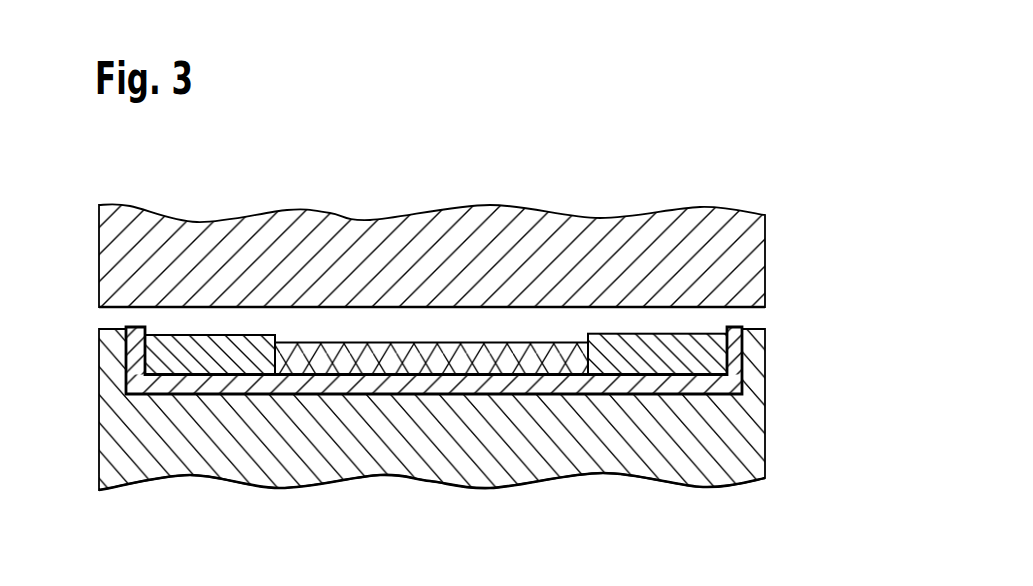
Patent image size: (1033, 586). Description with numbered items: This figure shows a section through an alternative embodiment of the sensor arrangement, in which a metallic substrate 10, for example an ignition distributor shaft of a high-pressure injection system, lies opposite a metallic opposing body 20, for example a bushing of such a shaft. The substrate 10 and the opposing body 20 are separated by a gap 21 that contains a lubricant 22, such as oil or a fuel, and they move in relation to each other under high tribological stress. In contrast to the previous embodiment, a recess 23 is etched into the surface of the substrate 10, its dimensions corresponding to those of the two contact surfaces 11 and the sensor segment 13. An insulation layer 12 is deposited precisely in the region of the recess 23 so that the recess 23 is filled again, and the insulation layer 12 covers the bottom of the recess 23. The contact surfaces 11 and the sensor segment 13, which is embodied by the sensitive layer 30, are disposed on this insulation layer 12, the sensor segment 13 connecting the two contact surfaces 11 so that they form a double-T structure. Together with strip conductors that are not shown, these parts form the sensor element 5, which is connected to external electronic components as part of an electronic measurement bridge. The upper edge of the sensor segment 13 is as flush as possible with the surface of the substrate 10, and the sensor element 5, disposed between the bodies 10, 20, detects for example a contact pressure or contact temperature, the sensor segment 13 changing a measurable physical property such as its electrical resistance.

The sensor element 5 is at (431, 262).
The metallic substrate 10 is at (587, 450).
The contact surfaces 11 is at (122, 360).
The insulation layer 12 is at (213, 386).
The sensor segment 13 is at (431, 262).
The sensitive layer 30 is at (378, 322).
The metallic opposing body 20 is at (298, 224).
The gap 21 is at (827, 273).
The lubricant 22 is at (802, 301).
The recess 23 is at (448, 320).